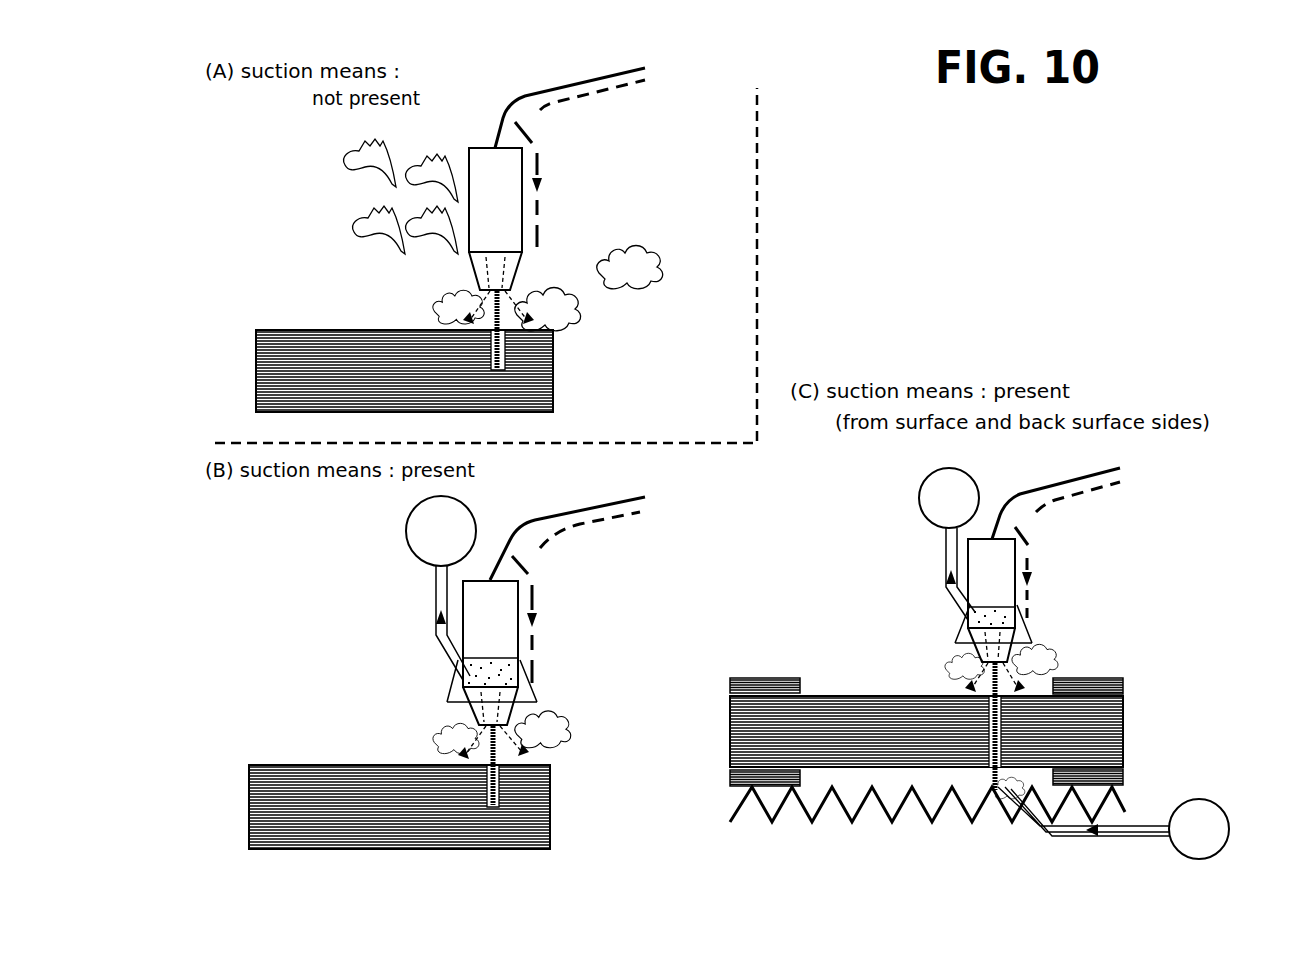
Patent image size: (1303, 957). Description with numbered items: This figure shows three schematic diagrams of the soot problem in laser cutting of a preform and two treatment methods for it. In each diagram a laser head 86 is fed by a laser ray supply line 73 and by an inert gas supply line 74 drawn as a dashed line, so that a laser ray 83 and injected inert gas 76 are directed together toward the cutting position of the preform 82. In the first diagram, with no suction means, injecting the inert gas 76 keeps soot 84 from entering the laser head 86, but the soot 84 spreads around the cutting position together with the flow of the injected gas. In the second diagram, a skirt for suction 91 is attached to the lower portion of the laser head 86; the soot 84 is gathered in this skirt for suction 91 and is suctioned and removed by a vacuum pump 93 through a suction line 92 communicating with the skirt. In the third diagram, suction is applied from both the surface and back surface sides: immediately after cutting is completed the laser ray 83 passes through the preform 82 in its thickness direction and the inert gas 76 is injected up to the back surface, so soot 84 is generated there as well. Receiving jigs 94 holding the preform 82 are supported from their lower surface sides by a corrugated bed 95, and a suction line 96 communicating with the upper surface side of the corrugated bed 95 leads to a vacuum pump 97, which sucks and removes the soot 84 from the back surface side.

The laser ray supply line 73 is at (498, 112).
The inert gas supply line 74 is at (545, 108).
The inert gas 76 is at (495, 360).
The preform 82 is at (375, 365).
The laser ray 83 is at (503, 368).
The soot 84 is at (447, 320).
The laser head 86 is at (495, 180).
The skirt for suction 91 is at (505, 676).
The suction line 92 is at (436, 618).
The vacuum pump 93 is at (405, 532).
The receiving jigs 94 is at (1030, 500).
The corrugated bed 95 is at (840, 808).
The suction line 96 is at (1165, 825).
The vacuum pump 97 is at (1229, 826).